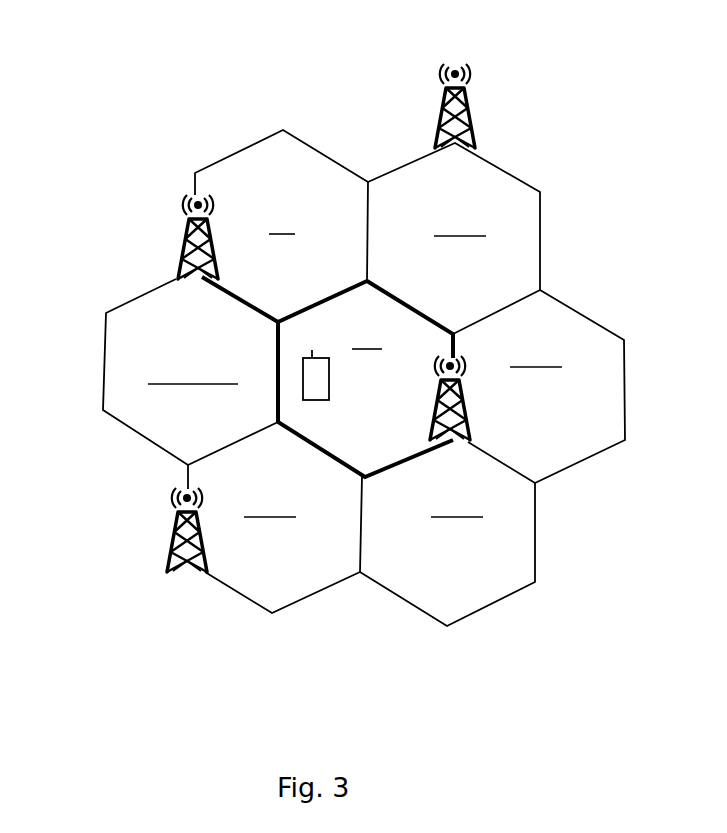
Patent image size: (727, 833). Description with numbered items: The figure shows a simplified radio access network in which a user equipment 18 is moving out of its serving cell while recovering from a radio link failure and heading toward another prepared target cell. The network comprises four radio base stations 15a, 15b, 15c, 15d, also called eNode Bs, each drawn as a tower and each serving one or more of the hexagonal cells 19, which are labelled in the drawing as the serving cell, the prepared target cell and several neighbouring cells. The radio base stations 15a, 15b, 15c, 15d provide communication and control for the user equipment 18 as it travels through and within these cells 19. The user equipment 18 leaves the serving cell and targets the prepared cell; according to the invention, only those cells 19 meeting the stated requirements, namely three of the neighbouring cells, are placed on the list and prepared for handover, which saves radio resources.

The radio base station 15a is at (468, 118).
The radio base station 15b is at (186, 246).
The radio base station 15c is at (173, 541).
The radio base station 15d is at (463, 411).
The user equipment 18 is at (329, 380).
The cells 19 is at (370, 442).